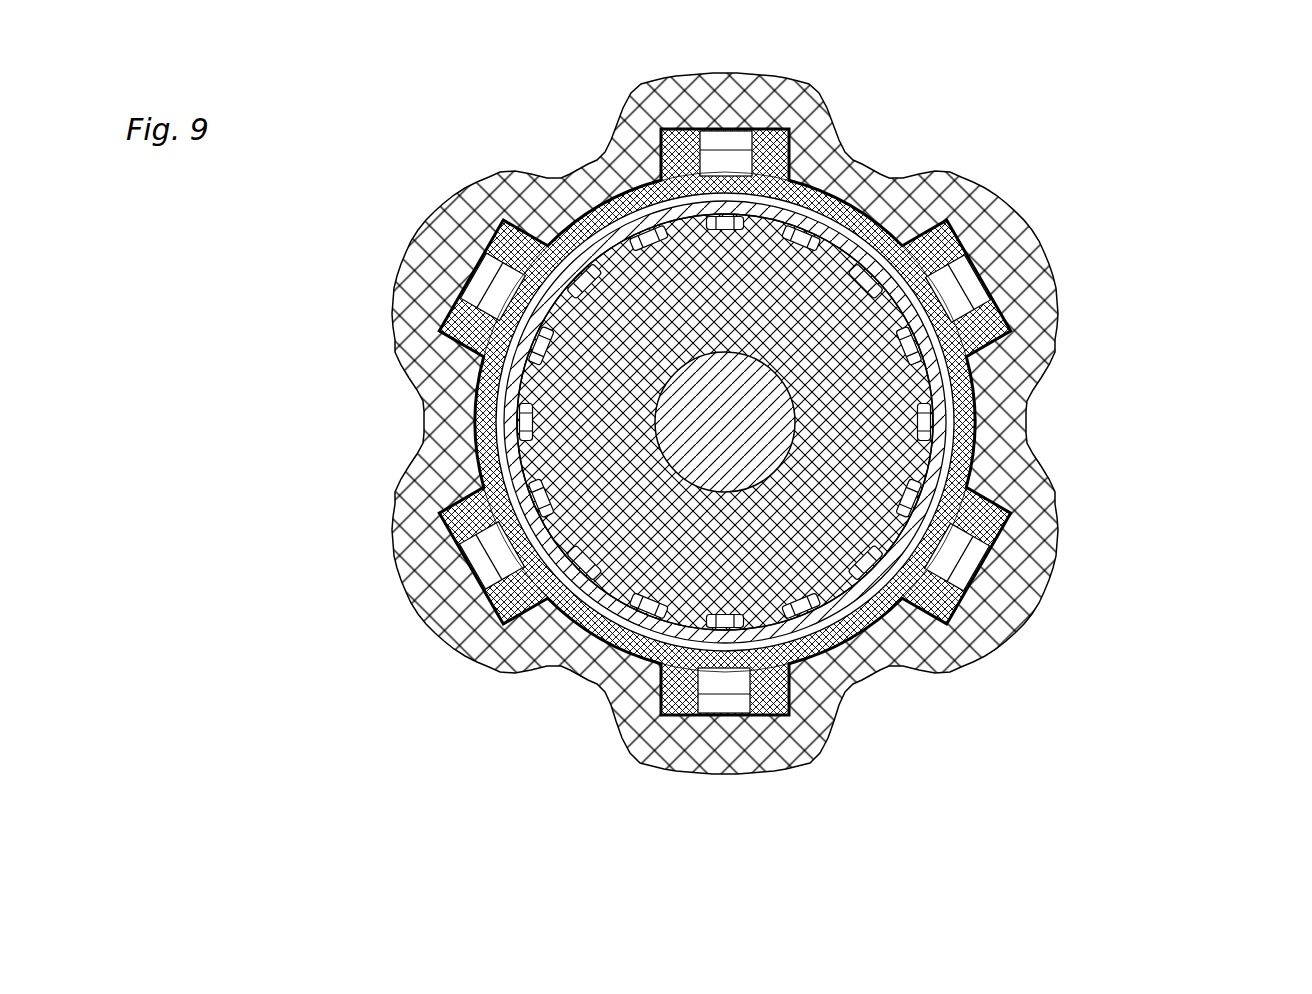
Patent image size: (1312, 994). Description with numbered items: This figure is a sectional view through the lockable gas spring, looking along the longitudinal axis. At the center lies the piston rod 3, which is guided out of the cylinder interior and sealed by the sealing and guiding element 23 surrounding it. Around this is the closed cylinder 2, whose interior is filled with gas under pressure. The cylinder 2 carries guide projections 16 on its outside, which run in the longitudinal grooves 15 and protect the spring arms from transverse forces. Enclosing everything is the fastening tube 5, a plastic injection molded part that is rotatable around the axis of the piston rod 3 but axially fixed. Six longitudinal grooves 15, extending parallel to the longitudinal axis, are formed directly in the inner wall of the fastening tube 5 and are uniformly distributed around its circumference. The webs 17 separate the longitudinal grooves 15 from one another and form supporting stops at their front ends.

The cylinder 2 is at (963, 183).
The piston rod 3 is at (767, 428).
The fastening tube 5 is at (872, 180).
The longitudinal grooves 15 is at (718, 150).
The guide projections 16 is at (945, 226).
The webs 17 is at (490, 437).
The sealing and guiding element 23 is at (894, 389).